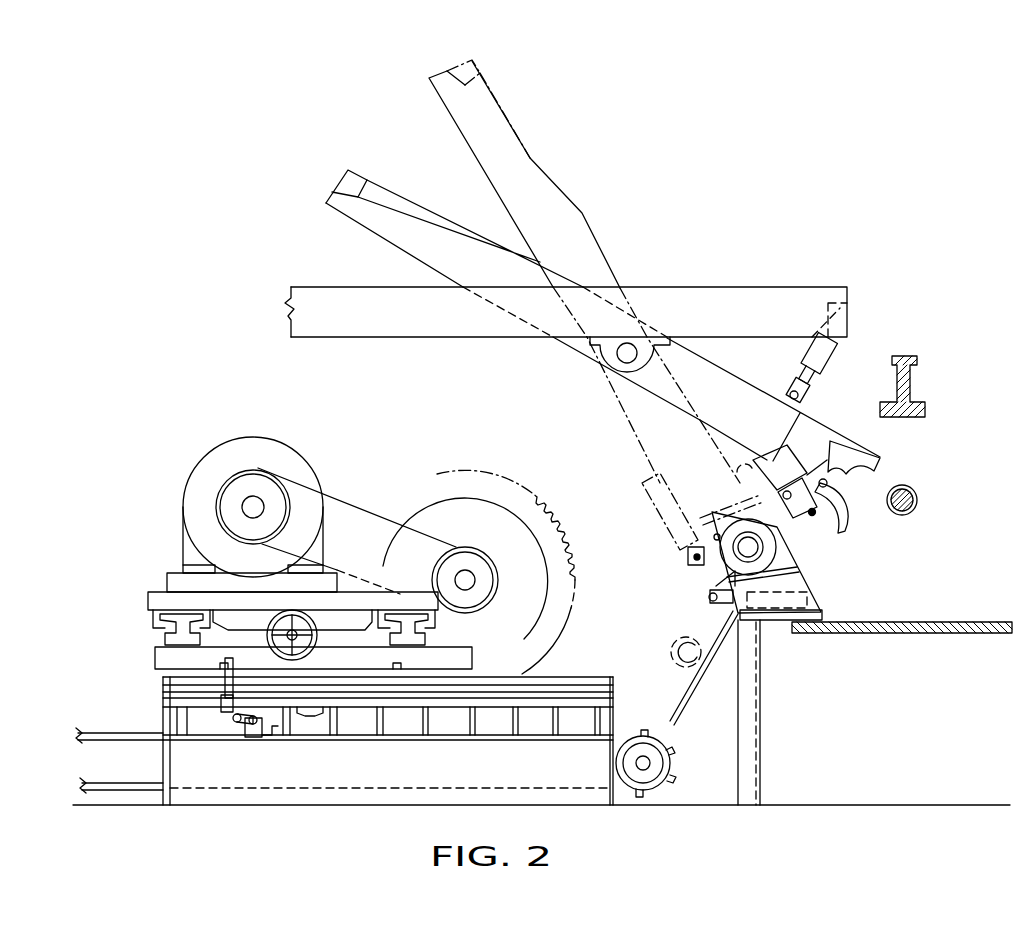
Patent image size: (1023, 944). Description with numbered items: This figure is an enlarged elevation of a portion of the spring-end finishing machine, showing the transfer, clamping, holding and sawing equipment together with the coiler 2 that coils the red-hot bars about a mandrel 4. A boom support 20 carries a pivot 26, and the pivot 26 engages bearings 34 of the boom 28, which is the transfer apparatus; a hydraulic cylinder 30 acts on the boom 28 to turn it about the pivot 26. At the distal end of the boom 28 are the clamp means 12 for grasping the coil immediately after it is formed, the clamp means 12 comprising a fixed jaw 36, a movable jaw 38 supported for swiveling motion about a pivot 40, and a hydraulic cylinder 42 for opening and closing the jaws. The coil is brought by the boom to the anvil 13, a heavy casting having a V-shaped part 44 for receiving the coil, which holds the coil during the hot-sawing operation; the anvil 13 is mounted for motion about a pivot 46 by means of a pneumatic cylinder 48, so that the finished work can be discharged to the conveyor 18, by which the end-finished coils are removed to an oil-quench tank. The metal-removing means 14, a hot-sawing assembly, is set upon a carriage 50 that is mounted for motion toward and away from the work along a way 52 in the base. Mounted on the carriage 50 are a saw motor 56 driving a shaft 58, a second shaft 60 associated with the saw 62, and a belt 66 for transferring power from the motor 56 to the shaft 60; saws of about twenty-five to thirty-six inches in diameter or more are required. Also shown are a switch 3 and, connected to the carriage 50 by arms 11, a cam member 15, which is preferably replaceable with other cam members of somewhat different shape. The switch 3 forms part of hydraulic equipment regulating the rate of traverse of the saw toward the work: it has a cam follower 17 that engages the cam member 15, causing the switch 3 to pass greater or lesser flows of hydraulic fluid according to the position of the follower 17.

The coiler 2 is at (918, 363).
The switch 3 is at (253, 738).
The mandrel 4 is at (920, 501).
The arms 11 is at (160, 663).
The clamp means 12 is at (842, 453).
The anvil 13 is at (708, 575).
The metal-removing means 14 is at (410, 467).
The cam member 15 is at (305, 722).
The cam follower 17 is at (233, 722).
The conveyor 18 is at (667, 741).
The boom support 20 is at (713, 287).
The pivot 26 is at (615, 357).
The boom 28 is at (746, 419).
The hydraulic cylinder 30 is at (812, 364).
The bearings 34 is at (615, 370).
The fixed jaw 36 is at (877, 457).
The movable jaw 38 is at (837, 528).
The pivot 40 is at (833, 485).
The hydraulic cylinder 42 is at (753, 472).
The V-shaped part 44 is at (768, 557).
The pivot 46 is at (715, 597).
The pneumatic cylinder 48 is at (788, 600).
The carriage 50 is at (475, 658).
The way 52 is at (573, 675).
The saw motor 56 is at (183, 487).
The shaft 58 is at (256, 497).
The second shaft 60 is at (474, 577).
The saw 62 is at (475, 467).
The belt 66 is at (337, 493).